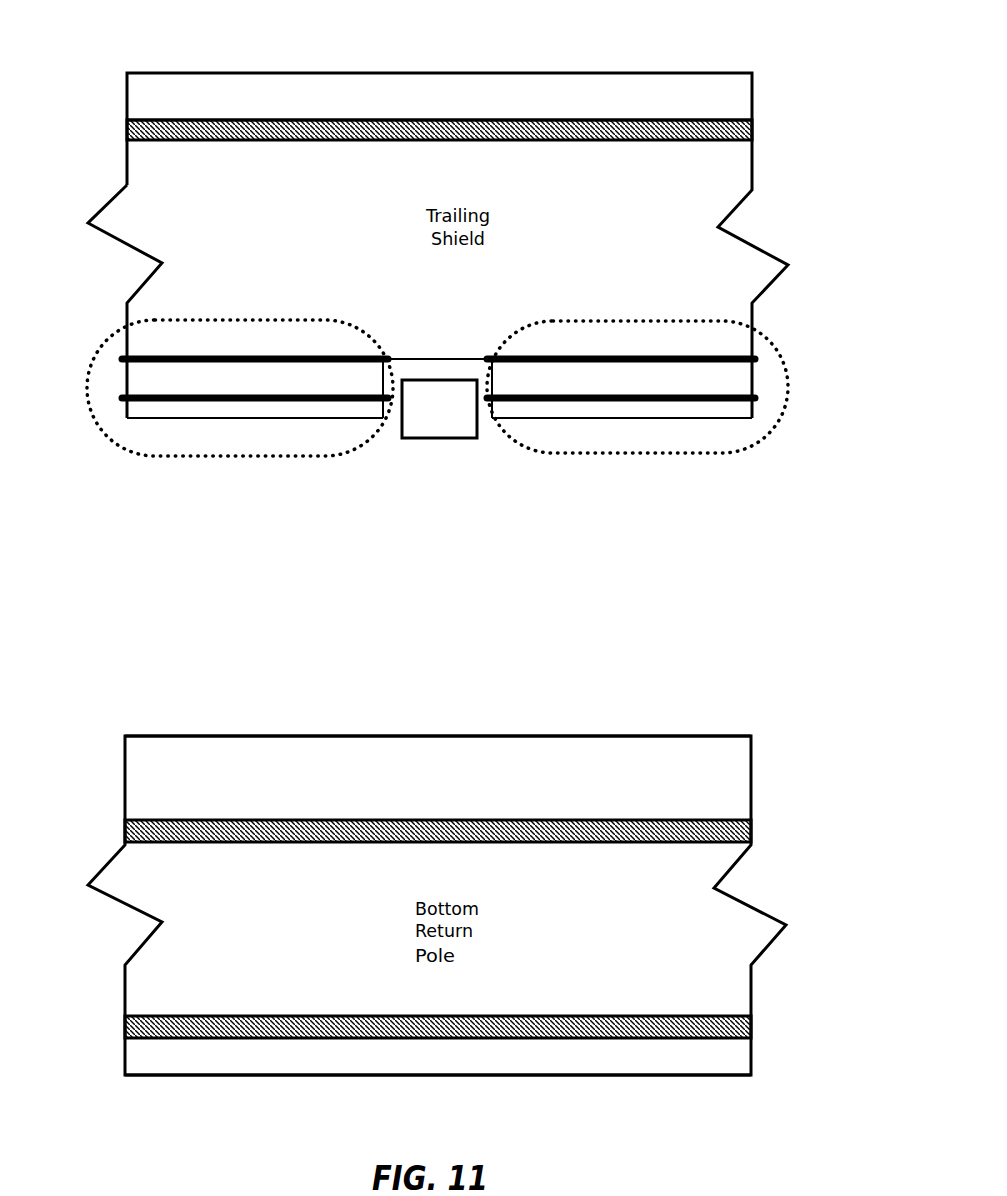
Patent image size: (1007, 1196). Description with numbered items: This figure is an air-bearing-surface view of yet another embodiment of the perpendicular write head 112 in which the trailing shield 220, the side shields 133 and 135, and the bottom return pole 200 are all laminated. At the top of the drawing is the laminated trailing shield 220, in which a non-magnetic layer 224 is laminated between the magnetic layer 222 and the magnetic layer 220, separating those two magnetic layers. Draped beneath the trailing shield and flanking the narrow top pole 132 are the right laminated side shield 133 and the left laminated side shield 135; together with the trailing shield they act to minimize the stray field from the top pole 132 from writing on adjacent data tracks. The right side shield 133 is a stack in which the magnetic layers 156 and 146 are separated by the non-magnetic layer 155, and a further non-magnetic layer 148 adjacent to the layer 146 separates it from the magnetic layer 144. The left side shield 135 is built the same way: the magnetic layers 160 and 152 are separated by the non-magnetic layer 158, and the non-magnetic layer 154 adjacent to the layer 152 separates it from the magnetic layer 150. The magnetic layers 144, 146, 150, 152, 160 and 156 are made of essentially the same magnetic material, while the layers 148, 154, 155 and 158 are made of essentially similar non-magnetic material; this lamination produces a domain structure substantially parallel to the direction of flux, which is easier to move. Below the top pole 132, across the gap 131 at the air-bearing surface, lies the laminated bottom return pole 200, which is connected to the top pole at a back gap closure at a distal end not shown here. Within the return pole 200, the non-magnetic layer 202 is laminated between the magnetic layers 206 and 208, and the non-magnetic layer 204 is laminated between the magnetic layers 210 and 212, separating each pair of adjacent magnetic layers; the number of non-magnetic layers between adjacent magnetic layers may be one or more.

The perpendicular write head 112 is at (752, 55).
The laminated trailing shield 220 is at (733, 180).
The magnetic layer 222 is at (212, 106).
The non-magnetic layer 224 is at (125, 128).
The non-magnetic layer 154 is at (240, 355).
The non-magnetic layer 158 is at (182, 397).
The magnetic layer 152 is at (145, 379).
The magnetic layer 160 is at (145, 407).
The left laminated side shield 135 is at (107, 352).
The magnetic layer 150 is at (328, 340).
The top pole 132 is at (477, 427).
The magnetic layer 144 is at (548, 345).
The non-magnetic layer 155 is at (603, 395).
The magnetic layer 146 is at (743, 385).
The magnetic layer 156 is at (743, 413).
The non-magnetic layer 148 is at (733, 353).
The right laminated side shield 133 is at (762, 347).
The gap 131 is at (742, 478).
The laminated bottom return pole 200 is at (655, 983).
The non-magnetic layer 202 is at (752, 830).
The non-magnetic layer 204 is at (752, 1025).
The magnetic layer 206 is at (219, 788).
The magnetic layer 208 is at (224, 888).
The magnetic layer 210 is at (224, 1006).
The magnetic layer 212 is at (208, 1053).